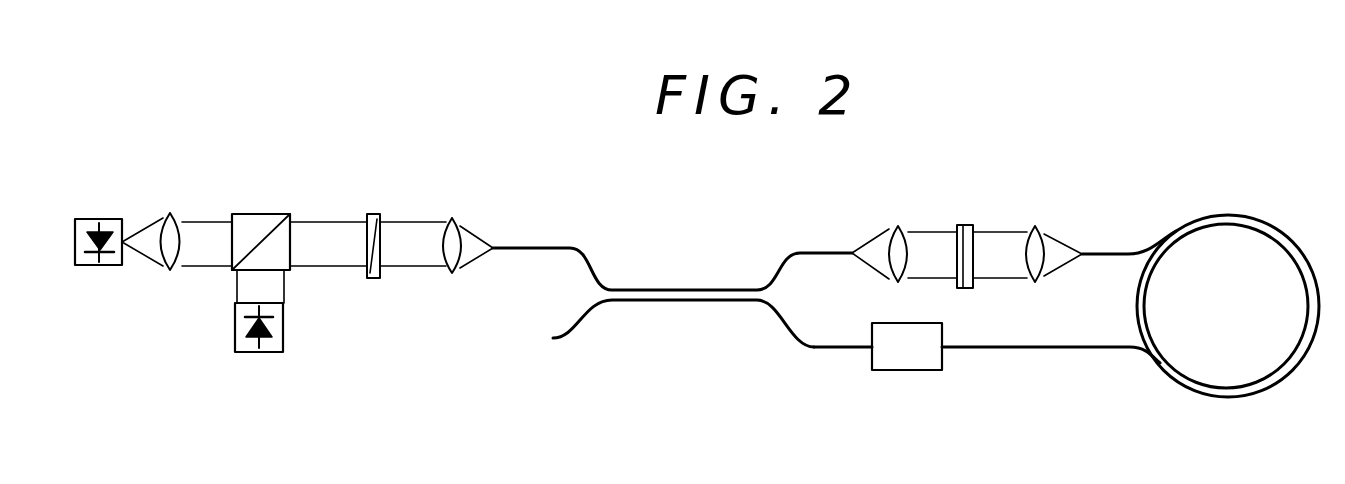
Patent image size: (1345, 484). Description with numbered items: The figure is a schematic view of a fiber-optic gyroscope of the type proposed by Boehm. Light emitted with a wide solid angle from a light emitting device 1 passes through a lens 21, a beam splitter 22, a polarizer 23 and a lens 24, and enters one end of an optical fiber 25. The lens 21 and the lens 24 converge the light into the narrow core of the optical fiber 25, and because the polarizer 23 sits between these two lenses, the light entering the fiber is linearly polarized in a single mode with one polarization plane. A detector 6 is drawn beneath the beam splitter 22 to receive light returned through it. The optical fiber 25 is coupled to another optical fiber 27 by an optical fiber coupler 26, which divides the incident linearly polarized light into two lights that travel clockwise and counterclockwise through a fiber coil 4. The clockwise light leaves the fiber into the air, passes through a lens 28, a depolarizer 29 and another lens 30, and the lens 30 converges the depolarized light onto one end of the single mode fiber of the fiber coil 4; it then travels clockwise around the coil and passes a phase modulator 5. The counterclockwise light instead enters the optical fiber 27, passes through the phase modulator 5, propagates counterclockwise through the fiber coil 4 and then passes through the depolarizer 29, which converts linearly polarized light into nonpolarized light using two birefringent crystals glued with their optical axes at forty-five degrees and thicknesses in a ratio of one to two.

The light emitting device 1 is at (110, 258).
The fiber coil 4 is at (1288, 240).
The phase modulator 5 is at (930, 365).
The photodetector 6 is at (274, 345).
The lens 21 is at (172, 235).
The beam splitter 22 is at (250, 228).
The polarizer 23 is at (372, 214).
The lens 24 is at (456, 227).
The optical fiber 25 is at (569, 248).
The optical fiber coupler 26 is at (652, 297).
The optical fiber 27 is at (829, 349).
The lens 28 is at (900, 256).
The depolarizer 29 is at (975, 240).
The lens 30 is at (1042, 256).